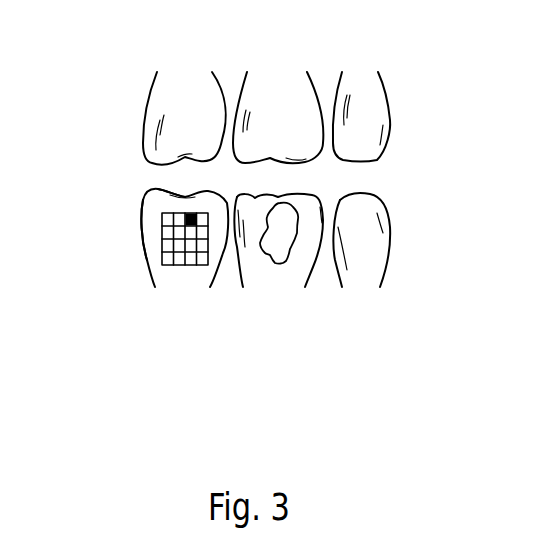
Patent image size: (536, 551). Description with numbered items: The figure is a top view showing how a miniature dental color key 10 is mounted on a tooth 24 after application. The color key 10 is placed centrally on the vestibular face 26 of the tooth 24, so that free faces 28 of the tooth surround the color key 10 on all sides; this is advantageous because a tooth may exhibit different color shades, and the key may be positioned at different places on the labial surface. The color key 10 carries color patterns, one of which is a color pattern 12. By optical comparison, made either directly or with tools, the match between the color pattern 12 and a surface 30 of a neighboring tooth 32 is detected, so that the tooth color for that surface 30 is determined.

The color key 10 is at (173, 265).
The color pattern 12 is at (192, 213).
The tooth 24 is at (197, 298).
The vestibular face 26 is at (152, 230).
The free faces 28 is at (165, 193).
The surface 30 is at (280, 242).
The neighboring tooth 32 is at (290, 298).